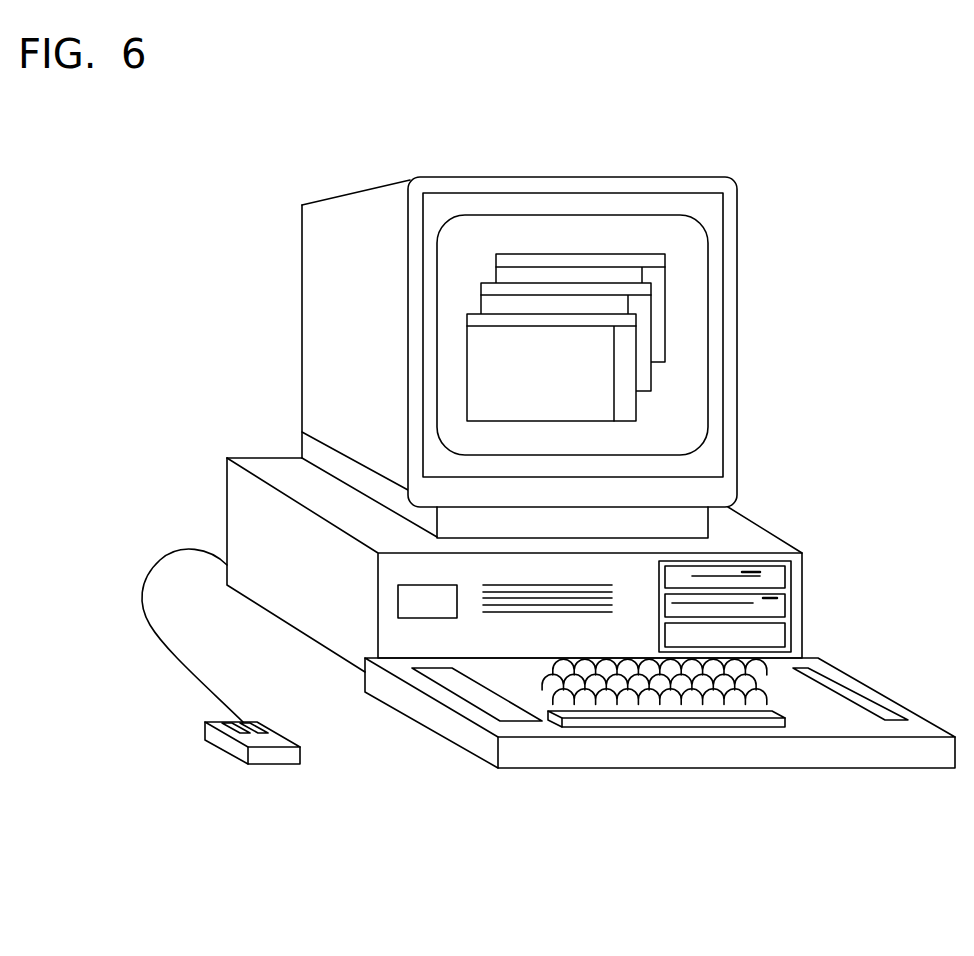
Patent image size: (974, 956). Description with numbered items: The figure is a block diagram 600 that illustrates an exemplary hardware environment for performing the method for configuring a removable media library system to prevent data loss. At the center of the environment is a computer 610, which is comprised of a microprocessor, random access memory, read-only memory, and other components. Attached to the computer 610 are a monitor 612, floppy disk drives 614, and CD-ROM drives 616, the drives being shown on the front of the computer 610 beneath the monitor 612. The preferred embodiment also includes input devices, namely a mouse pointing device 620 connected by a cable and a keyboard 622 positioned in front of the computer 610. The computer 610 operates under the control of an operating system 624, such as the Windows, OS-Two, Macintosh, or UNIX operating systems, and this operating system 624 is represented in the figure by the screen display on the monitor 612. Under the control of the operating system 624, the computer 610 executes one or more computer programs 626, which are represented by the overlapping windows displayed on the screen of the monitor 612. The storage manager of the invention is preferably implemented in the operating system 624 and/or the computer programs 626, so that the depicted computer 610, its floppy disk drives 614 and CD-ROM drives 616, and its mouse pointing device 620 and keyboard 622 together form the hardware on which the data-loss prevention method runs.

The block diagram 600 is at (827, 105).
The computer 610 is at (765, 530).
The monitor 612 is at (613, 177).
The floppy disk drives 614 is at (778, 604).
The CD-ROM drives 616 is at (772, 637).
The mouse pointing device 620 is at (218, 740).
The keyboard 622 is at (868, 752).
The operating system 624 is at (472, 232).
The computer programs 626 is at (682, 325).